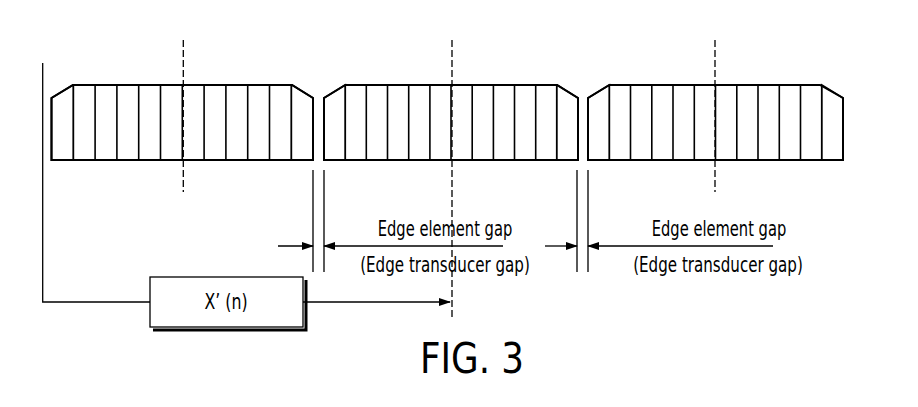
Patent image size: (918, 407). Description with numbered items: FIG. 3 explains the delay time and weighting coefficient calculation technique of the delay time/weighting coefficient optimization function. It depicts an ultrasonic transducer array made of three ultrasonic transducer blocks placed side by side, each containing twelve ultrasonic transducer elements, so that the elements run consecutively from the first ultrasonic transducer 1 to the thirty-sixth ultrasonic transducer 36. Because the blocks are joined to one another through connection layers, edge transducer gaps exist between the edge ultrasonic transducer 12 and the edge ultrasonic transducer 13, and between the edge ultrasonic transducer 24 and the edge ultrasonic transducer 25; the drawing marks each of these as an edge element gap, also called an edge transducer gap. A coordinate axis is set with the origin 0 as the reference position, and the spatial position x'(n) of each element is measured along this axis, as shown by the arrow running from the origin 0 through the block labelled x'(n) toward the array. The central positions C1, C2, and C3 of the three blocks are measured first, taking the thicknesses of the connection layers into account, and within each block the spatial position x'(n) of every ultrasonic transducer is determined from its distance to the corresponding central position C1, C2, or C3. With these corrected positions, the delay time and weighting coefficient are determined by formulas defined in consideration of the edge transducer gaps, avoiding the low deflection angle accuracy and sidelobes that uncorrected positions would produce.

The origin 0 is at (93, 204).
The ultrasonic transducer 1 is at (67, 138).
The edge ultrasonic transducer 12 is at (300, 138).
The edge ultrasonic transducer 13 is at (337, 138).
The edge ultrasonic transducer 24 is at (565, 138).
The edge ultrasonic transducer 25 is at (601, 138).
The ultrasonic transducer 36 is at (833, 138).
The central position C1 is at (183, 98).
The central position C2 is at (452, 160).
The central position C3 is at (715, 98).